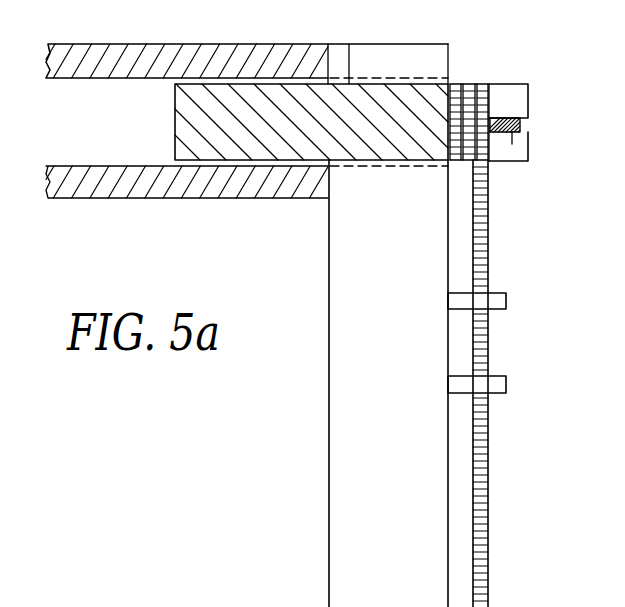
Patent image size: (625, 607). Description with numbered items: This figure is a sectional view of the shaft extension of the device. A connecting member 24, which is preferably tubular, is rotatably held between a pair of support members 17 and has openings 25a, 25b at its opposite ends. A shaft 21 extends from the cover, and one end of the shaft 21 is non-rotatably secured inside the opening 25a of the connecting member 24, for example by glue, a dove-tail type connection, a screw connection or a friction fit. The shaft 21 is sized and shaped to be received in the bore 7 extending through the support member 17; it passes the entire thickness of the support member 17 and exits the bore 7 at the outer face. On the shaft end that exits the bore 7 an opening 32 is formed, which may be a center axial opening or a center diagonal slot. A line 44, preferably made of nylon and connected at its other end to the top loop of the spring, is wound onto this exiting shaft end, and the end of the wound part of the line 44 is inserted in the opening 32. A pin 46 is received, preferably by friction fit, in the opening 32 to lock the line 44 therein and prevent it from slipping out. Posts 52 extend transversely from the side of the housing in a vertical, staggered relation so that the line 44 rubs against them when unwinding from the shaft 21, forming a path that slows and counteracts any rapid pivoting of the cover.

The bore 7 is at (349, 45).
The support member 17 is at (413, 62).
The shaft 21 is at (513, 86).
The connecting member 24 is at (100, 44).
The opening 25a is at (142, 105).
The opening 25b is at (119, 597).
The opening 32 is at (521, 125).
The line 44 is at (478, 472).
The pin 46 is at (512, 144).
The post 52 is at (508, 300).